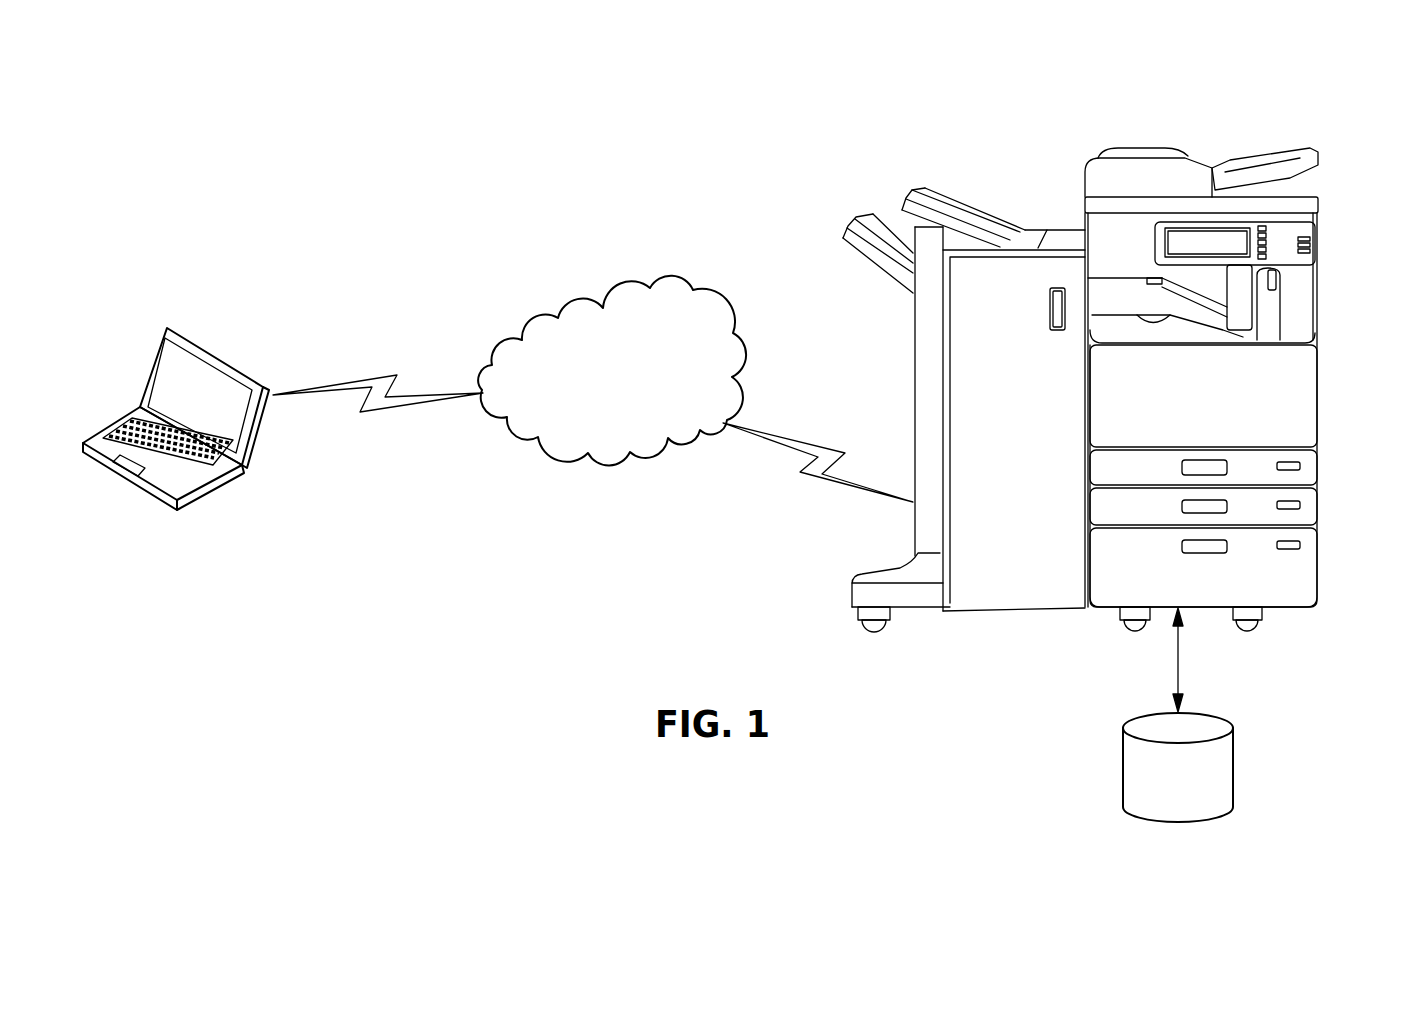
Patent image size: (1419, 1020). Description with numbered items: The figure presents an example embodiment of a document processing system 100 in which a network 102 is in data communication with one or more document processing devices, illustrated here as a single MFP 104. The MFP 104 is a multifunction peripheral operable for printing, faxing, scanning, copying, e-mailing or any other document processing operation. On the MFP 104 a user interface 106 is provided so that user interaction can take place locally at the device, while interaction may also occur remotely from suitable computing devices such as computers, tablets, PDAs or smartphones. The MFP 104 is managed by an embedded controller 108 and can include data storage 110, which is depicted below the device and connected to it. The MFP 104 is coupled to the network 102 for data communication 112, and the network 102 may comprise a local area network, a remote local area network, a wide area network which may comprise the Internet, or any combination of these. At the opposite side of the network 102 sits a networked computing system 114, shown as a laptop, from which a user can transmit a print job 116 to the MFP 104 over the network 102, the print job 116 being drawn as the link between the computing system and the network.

The document processing system 100 is at (268, 157).
The network 102 is at (625, 282).
The MFP 104 is at (1117, 148).
The user interface 106 is at (1318, 240).
The embedded controller 108 is at (1303, 370).
The data storage 110 is at (1233, 752).
The data communication 112 is at (820, 478).
The networked computing system 114 is at (152, 356).
The print job 116 is at (392, 408).